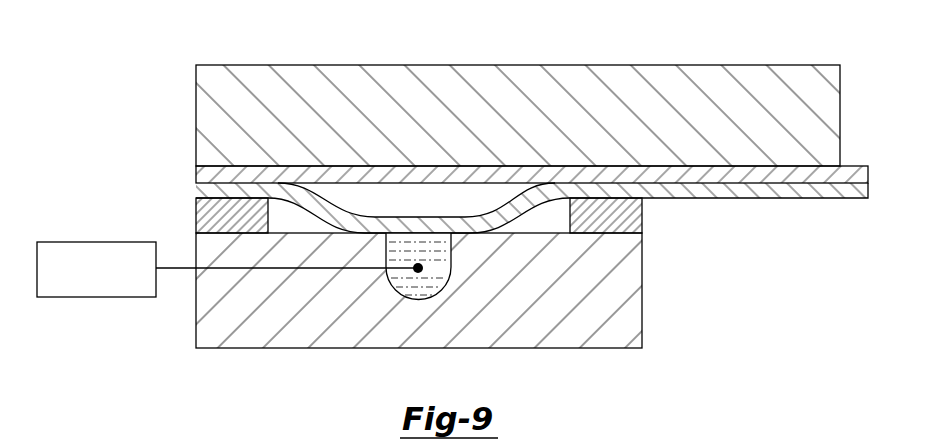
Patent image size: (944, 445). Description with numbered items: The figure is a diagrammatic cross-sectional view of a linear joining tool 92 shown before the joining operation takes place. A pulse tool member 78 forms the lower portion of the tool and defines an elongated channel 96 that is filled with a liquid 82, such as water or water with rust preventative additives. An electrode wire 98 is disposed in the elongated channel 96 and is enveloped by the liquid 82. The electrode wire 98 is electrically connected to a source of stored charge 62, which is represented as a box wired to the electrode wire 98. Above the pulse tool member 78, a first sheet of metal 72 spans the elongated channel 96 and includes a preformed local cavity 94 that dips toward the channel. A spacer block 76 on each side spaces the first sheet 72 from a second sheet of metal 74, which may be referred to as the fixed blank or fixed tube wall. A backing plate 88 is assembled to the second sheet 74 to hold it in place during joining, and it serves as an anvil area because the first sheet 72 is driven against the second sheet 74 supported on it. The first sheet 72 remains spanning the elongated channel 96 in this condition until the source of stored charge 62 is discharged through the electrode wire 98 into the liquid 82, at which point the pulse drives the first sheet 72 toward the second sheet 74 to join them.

The linear joining tool 92 is at (129, 58).
The backing plate 88 is at (603, 76).
The second sheet of metal 74 is at (851, 166).
The first sheet of metal 72 is at (841, 199).
The preformed local cavity 94 is at (404, 195).
The spacer block 76 is at (200, 214).
The pulse tool member 78 is at (627, 308).
The liquid 82 is at (419, 295).
The electrode wire 98 is at (423, 268).
The elongated channel 96 is at (395, 272).
The source of stored charge 62 is at (98, 242).